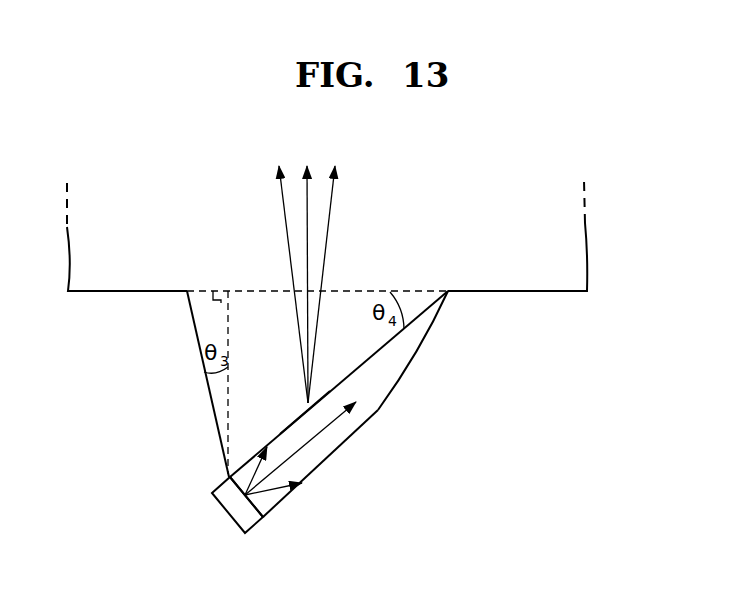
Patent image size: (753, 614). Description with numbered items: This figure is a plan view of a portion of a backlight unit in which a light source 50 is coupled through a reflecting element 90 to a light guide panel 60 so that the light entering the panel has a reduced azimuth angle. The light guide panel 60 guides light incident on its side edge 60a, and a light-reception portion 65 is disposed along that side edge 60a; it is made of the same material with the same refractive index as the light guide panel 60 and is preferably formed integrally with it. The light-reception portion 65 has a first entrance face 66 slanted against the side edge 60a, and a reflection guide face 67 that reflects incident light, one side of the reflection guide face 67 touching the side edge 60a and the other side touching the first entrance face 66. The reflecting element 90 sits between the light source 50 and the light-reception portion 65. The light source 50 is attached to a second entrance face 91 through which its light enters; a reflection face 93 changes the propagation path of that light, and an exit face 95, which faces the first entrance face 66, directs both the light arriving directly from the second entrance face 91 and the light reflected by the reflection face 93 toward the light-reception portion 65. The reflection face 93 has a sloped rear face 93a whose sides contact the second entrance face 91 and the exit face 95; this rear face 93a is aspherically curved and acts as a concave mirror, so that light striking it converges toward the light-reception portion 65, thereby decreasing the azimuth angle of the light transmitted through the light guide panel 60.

The light source 50 is at (228, 502).
The second entrance face 91 is at (256, 511).
The reflecting element 90 is at (325, 486).
The reflection face 93 is at (390, 397).
The rear face 93a is at (372, 415).
The exit face 95 is at (280, 432).
The first entrance face 66 is at (347, 386).
The light-reception portion 65 is at (187, 373).
The reflection guide face 67 is at (196, 322).
The light guide panel 60 is at (552, 277).
The side edge 60a is at (487, 292).